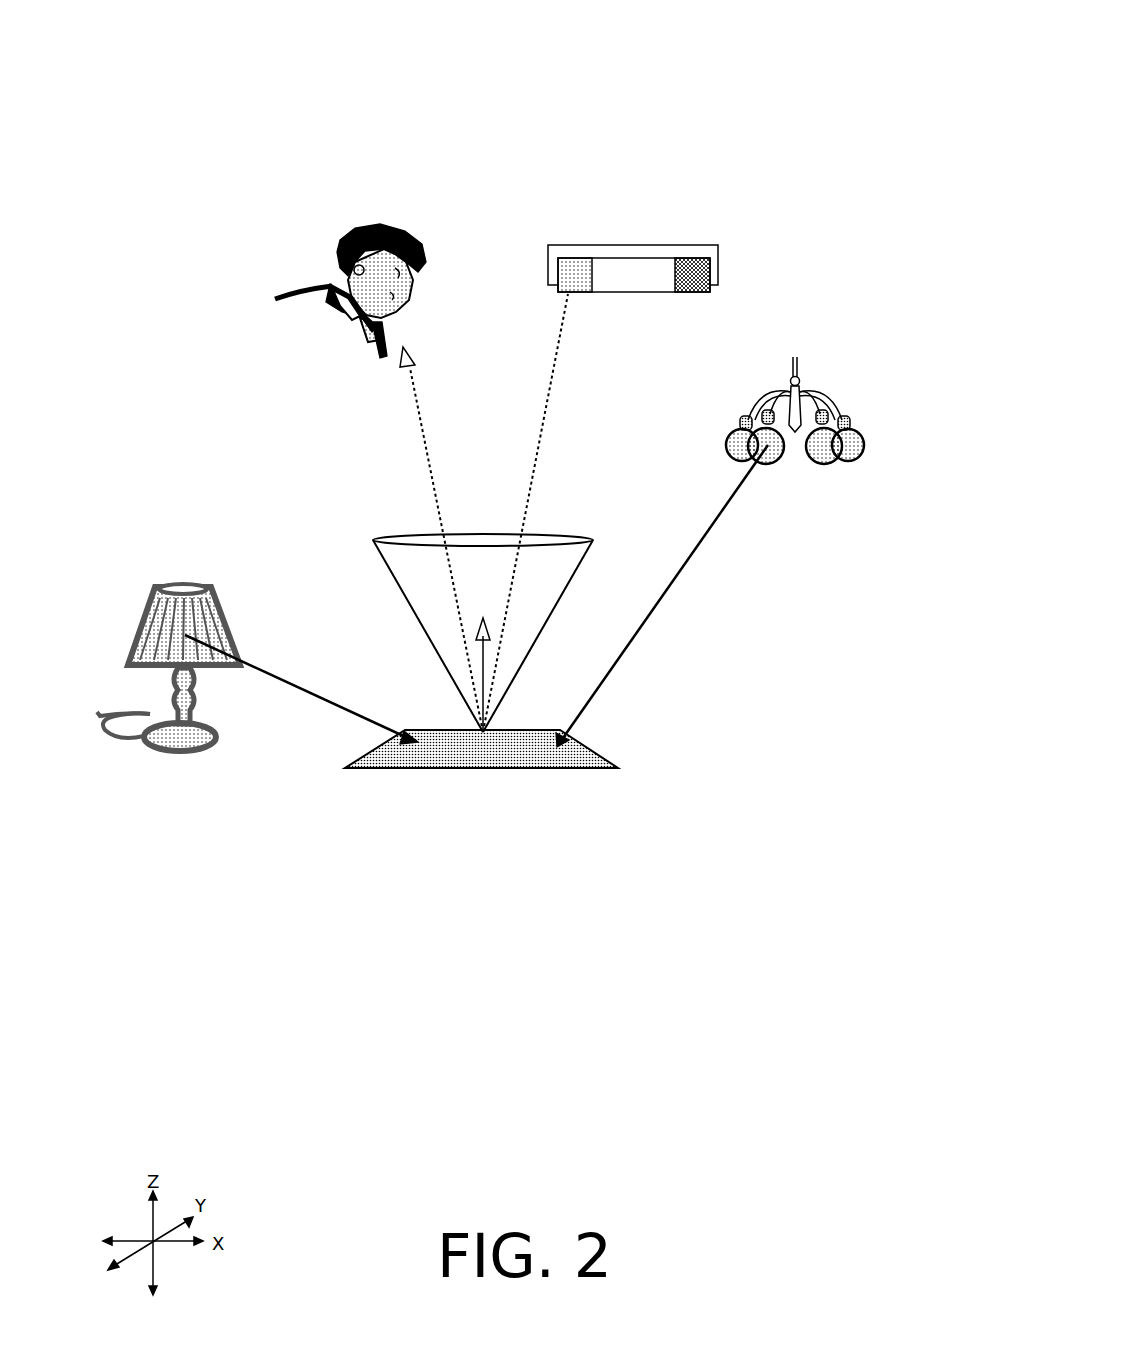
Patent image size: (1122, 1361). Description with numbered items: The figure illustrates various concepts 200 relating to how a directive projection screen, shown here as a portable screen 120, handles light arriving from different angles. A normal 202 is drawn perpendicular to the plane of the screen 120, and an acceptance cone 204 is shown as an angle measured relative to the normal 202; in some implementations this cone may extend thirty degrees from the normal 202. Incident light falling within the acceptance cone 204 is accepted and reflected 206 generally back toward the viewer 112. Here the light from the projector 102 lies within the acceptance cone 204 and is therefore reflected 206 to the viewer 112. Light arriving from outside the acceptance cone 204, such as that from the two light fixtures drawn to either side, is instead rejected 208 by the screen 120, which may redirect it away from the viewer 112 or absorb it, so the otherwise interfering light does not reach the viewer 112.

The concepts 200 is at (825, 28).
The viewer 112 is at (349, 274).
The projector 102 is at (708, 255).
The portable screen 120 is at (598, 708).
The normal 202 is at (646, 787).
The acceptance cone 204 is at (352, 590).
The reflected light 206 is at (323, 539).
The rejected light 208 is at (272, 787).